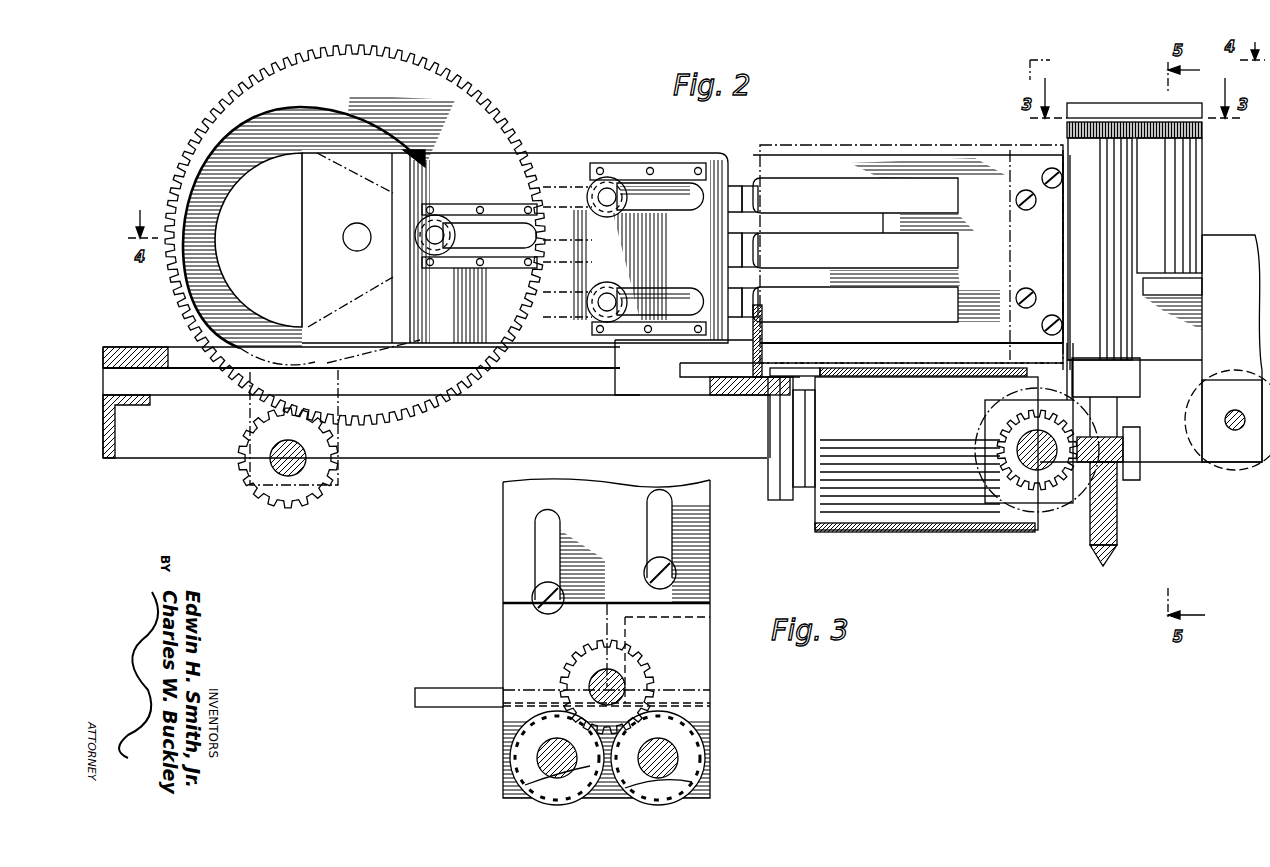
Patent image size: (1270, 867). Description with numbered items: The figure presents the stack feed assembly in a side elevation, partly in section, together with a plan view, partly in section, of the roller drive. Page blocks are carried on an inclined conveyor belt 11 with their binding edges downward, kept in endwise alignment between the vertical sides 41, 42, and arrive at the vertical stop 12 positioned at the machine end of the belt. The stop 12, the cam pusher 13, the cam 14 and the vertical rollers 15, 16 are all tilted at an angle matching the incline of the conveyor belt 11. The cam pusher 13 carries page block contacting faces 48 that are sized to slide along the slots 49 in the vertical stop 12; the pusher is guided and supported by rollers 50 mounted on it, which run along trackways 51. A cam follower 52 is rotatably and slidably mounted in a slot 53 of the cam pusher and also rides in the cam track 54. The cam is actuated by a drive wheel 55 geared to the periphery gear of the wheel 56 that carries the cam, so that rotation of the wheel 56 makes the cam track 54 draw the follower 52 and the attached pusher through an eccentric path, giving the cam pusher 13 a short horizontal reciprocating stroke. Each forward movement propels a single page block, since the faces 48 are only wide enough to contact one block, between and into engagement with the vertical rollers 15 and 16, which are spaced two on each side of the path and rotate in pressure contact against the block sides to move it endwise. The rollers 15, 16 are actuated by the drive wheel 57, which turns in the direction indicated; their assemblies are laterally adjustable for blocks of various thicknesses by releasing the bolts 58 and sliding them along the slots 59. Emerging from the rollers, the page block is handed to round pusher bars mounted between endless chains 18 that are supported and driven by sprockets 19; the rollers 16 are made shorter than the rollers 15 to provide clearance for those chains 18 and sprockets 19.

In FIG. 2, the conveyor belt 11 is at (880, 370).
In FIG. 2, the vertical stop 12 is at (872, 153).
In FIG. 2, the cam pusher 13 is at (738, 186).
In FIG. 2, the cam 14 is at (243, 183).
In FIG. 2, the vertical rollers 15 is at (1100, 249).
In FIG. 3, the vertical rollers 15 is at (570, 792).
In FIG. 2, the vertical rollers 16 is at (1169, 234).
In FIG. 3, the vertical rollers 16 is at (690, 798).
In FIG. 2, the endless chains 18 is at (1247, 487).
In FIG. 2, the sprockets 19 is at (1218, 470).
In FIG. 2, the vertical side 41 is at (1067, 288).
In FIG. 2, the vertical side 42 is at (754, 349).
In FIG. 2, the page block contacting faces 48 is at (758, 197).
In FIG. 2, the slots 49 is at (883, 205).
In FIG. 2, the rollers 50 is at (612, 182).
In FIG. 2, the trackways 51 is at (641, 165).
In FIG. 2, the cam follower 52 is at (453, 222).
In FIG. 2, the slot 53 is at (478, 247).
In FIG. 2, the cam track 54 is at (398, 150).
In FIG. 2, the drive wheel 55 is at (285, 505).
In FIG. 2, the wheel 56 is at (268, 86).
In FIG. 3, the drive wheel 57 is at (648, 676).
In FIG. 3, the bolts 58 is at (538, 597).
In FIG. 3, the slots 59 is at (540, 543).